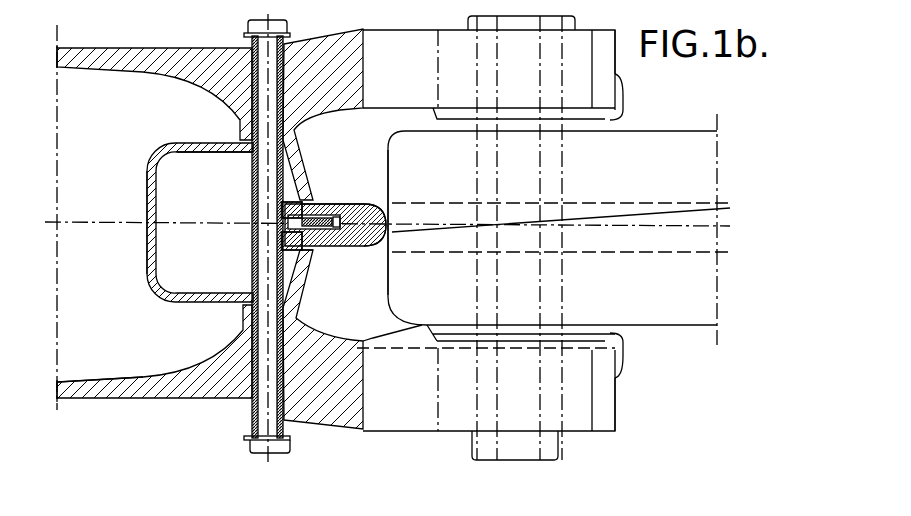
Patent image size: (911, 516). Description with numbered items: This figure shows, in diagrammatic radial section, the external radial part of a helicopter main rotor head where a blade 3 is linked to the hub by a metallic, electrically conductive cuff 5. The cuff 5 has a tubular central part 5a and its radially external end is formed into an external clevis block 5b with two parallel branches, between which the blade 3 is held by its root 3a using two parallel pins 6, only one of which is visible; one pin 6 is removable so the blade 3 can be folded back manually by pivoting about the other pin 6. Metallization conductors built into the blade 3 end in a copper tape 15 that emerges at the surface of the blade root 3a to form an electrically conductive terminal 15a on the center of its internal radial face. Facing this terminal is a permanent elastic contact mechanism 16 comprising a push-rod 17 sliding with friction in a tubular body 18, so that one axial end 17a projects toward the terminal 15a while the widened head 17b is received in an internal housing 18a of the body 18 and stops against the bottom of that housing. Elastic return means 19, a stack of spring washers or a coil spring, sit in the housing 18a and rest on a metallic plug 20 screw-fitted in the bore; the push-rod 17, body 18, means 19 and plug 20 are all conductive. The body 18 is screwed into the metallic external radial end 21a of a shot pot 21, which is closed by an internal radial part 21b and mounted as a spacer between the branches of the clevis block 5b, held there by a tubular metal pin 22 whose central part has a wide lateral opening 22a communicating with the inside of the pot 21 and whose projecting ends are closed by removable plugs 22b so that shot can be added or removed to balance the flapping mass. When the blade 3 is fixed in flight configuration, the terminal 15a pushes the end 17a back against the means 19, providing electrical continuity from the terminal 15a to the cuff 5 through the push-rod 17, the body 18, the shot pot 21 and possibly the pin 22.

The blade 3 is at (679, 437).
The blade root 3a is at (417, 283).
The cuff 5 is at (87, 402).
The central part 5a is at (131, 384).
The external clevis block 5b is at (387, 58).
The pin 6 is at (550, 182).
The copper tape 15 is at (637, 213).
The electrically conductive terminal 15a is at (390, 213).
The permanent elastic contact mechanism 16 is at (354, 196).
The push-rod 17 is at (370, 210).
The axial end 17a is at (377, 232).
The widened head 17b is at (350, 204).
The tubular body 18 is at (320, 200).
The internal housing 18a is at (332, 250).
The elastic return means 19 is at (321, 246).
The metallic plug 20 is at (292, 235).
The shot pot 21 is at (169, 140).
The external radial end 21a is at (290, 158).
The internal radial part 21b is at (147, 180).
The tubular metal pin 22 is at (200, 48).
The lateral opening 22a is at (267, 263).
The removable plug 22b is at (248, 25).